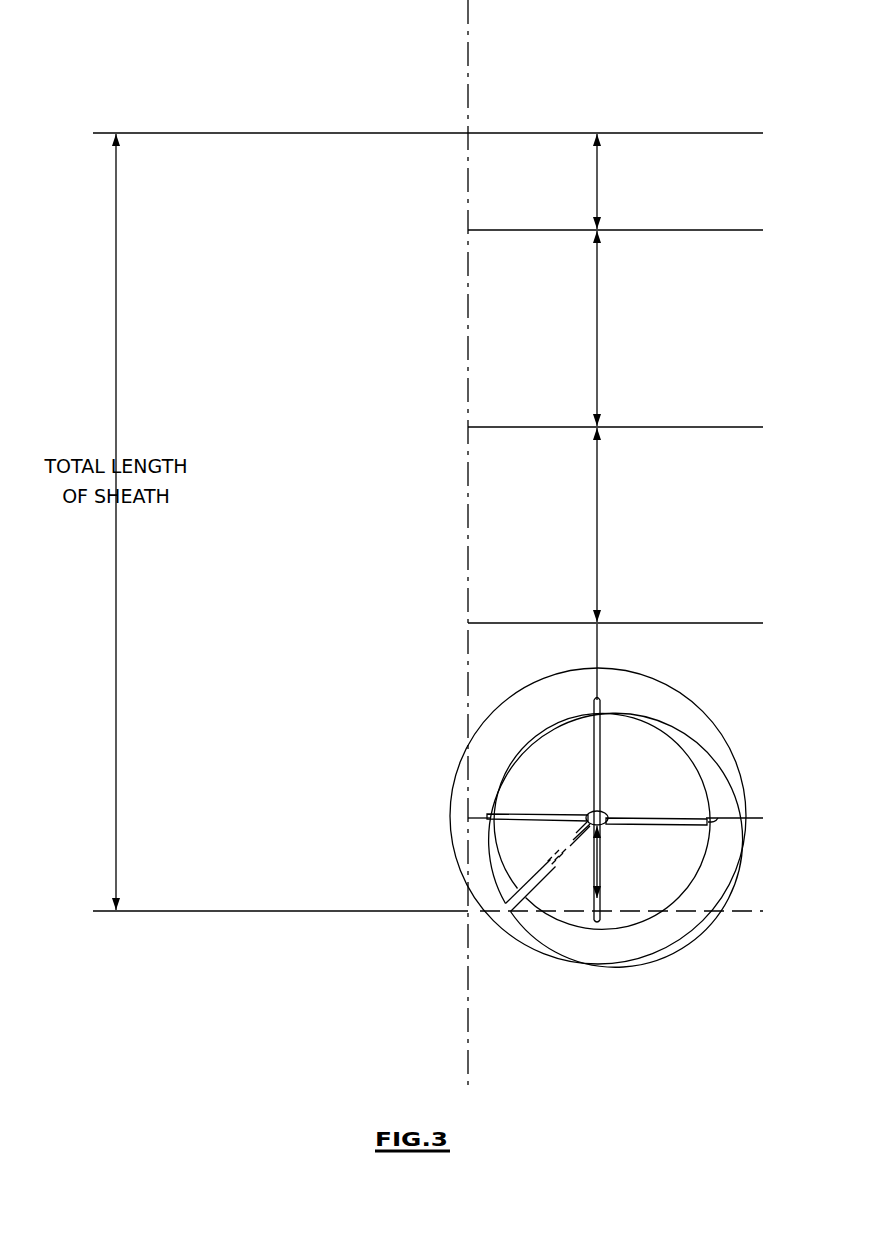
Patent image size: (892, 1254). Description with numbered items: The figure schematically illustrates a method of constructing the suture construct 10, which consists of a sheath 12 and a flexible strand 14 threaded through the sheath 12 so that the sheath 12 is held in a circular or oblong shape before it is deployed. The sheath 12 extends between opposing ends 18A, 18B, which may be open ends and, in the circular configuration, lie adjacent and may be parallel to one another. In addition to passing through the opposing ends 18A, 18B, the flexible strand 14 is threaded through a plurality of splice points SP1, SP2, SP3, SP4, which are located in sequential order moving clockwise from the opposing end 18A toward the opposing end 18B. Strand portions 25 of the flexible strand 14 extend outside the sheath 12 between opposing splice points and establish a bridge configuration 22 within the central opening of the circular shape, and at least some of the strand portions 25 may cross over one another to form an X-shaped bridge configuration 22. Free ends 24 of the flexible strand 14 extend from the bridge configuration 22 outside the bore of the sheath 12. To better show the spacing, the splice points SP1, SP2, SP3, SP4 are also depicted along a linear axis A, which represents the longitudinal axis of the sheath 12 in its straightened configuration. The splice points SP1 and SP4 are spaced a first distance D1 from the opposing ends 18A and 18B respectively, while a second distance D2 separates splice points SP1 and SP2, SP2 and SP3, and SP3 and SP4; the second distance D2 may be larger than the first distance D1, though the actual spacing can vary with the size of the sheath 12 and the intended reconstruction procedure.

The suture construct 10 is at (611, 851).
The sheath 12 is at (716, 910).
The flexible strand 14 is at (697, 834).
The opposing end 18A is at (455, 903).
The opposing end 18B is at (455, 141).
The bridge configuration 22 is at (623, 850).
The free ends 24 is at (607, 816).
The strand portions 25 is at (601, 764).
The splice point SP1 is at (455, 810).
The splice point SP2 is at (455, 632).
The splice point SP3 is at (455, 437).
The splice point SP4 is at (455, 240).
The first distance D1 is at (597, 182).
The second distance D2 is at (597, 327).
The linear axis A is at (468, 47).